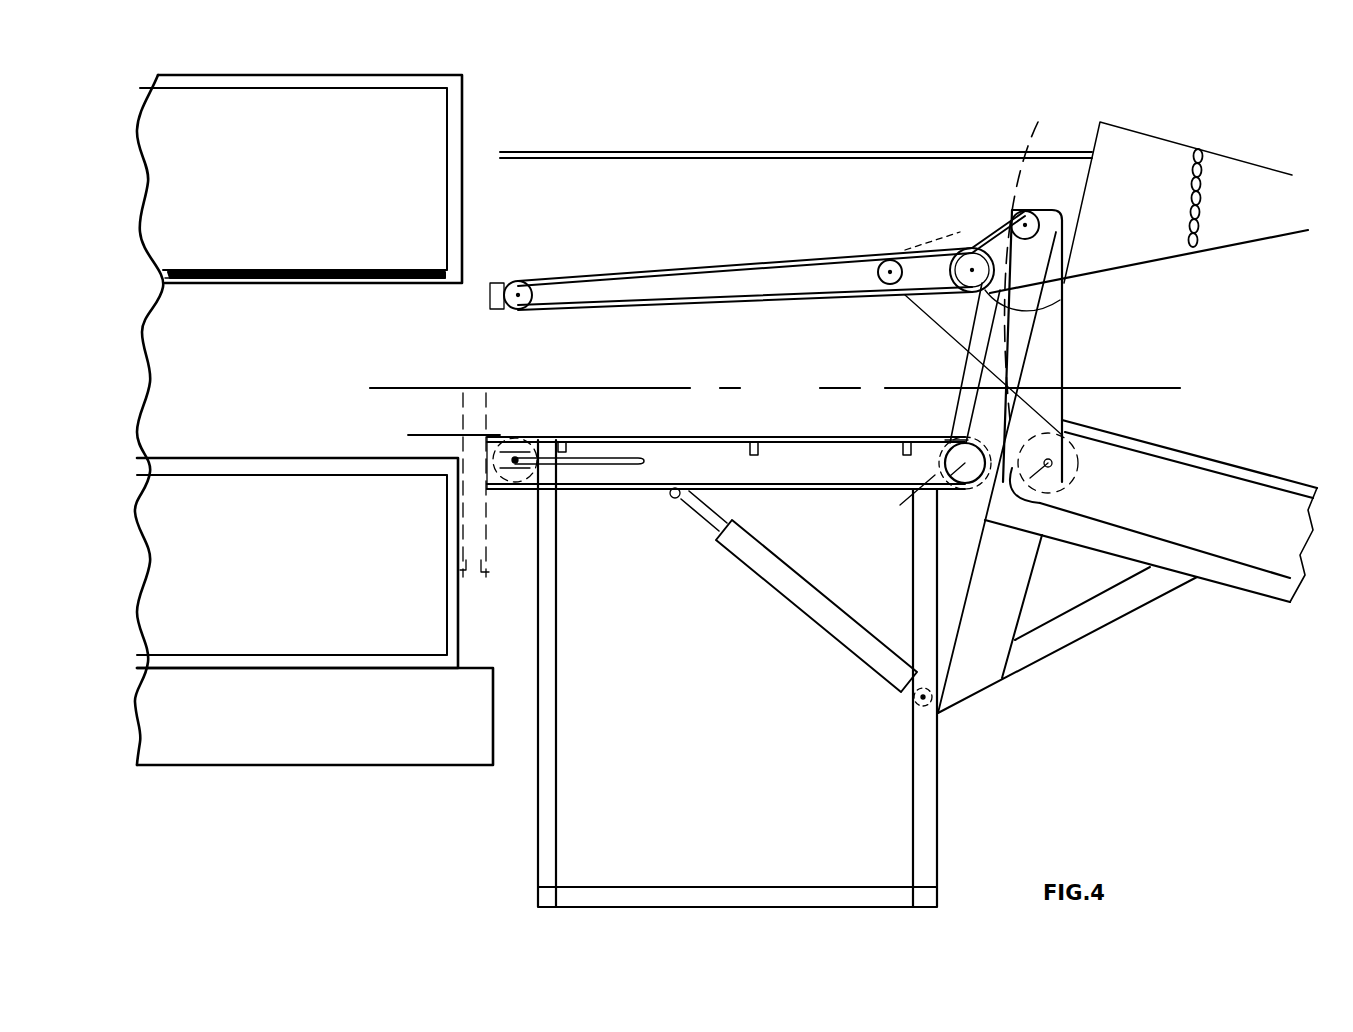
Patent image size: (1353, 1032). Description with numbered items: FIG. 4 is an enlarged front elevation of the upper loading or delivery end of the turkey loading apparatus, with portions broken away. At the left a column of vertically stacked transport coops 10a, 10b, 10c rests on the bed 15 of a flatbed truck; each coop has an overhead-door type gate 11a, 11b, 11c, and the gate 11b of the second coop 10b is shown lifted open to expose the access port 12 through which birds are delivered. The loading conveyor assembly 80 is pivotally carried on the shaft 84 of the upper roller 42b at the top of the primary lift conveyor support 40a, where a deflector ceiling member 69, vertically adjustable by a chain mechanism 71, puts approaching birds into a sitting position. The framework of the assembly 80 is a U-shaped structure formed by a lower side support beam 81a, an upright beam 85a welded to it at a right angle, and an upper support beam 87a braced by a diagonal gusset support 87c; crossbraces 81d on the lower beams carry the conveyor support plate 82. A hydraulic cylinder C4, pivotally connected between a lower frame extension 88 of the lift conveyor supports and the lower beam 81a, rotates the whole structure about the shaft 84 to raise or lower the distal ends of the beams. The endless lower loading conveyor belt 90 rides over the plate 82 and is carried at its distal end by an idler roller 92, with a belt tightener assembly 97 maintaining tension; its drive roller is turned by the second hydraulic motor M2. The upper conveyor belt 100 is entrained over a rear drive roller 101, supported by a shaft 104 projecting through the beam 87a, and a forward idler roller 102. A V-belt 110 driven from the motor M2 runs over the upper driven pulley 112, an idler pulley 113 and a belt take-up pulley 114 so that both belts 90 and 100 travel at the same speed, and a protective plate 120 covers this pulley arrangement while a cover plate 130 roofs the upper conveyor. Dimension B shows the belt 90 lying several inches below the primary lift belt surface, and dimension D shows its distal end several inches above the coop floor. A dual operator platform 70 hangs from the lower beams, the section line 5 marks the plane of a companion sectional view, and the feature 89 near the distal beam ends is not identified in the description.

The section line 5- 5 is at (375, 372).
The transport coop 10a is at (288, 584).
The second coop 10b is at (293, 381).
The transport coop 10c is at (310, 197).
The gate 11a is at (450, 573).
The gate member 11b is at (389, 289).
The gate 11c is at (453, 185).
The access port 12 is at (445, 347).
The bed 15 is at (370, 745).
The primary lift conveyor support 40a is at (1192, 472).
The upper roller 42b is at (1078, 482).
The deflector ceiling member 69 is at (1122, 268).
The dual operator platform 70 is at (556, 792).
The chain mechanism 71 is at (1200, 205).
The loading conveyor assembly 80 is at (766, 441).
The lower side support beam 81a is at (835, 472).
The crossbrace 81d is at (563, 444).
The conveyor support plate 82 is at (850, 438).
The shaft 84 is at (958, 488).
The upright beam 85a is at (1063, 358).
The upper support beam 87a is at (500, 290).
The gusset support 87c is at (960, 325).
The lower frame extension 88 is at (1015, 583).
The clearance gap 89 is at (474, 505).
The lower loading conveyor belt 90 is at (525, 436).
The idler roller 92 is at (512, 475).
The belt tightener assembly 97 is at (618, 466).
The upper conveyor belt 100 is at (766, 444).
The rear drive roller 101 is at (945, 228).
The forward idler roller 102 is at (518, 284).
The shaft 104 is at (1060, 301).
The V-belt 110 is at (968, 246).
The upper driven pulley 112 is at (955, 238).
The idler pulley 113 is at (1030, 212).
The belt take-up pulley 114 is at (880, 287).
The protective plate 120 is at (1038, 258).
The cover plate 130 is at (695, 160).
The dimension B is at (959, 425).
The hydraulic cylinder C4 is at (812, 607).
The dimension D is at (422, 405).
The second hydraulic motor M2 is at (916, 490).